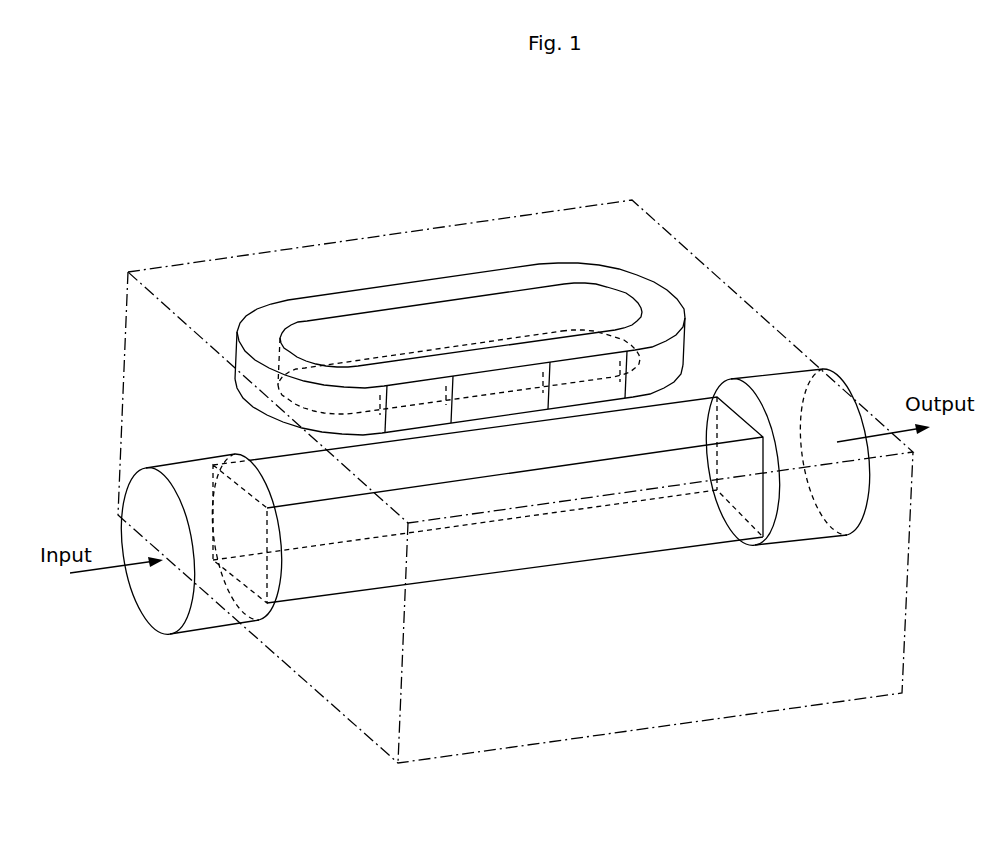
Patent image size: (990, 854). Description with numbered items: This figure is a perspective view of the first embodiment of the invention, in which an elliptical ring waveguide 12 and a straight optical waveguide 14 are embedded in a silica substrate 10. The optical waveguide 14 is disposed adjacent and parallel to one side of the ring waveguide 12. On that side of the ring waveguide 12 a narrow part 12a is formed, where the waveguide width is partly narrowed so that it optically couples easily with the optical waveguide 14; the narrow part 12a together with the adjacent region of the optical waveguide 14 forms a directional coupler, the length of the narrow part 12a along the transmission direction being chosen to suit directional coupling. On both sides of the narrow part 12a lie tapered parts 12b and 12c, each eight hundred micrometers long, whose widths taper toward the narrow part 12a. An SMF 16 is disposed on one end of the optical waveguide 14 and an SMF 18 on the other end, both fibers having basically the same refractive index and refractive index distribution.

The silica substrate 10 is at (704, 693).
The elliptical ring waveguide 12 is at (420, 290).
The narrow part 12a is at (500, 357).
The tapered part 12b is at (410, 373).
The tapered part 12c is at (593, 343).
The optical waveguide 14 is at (518, 555).
The SMF 16 is at (205, 617).
The SMF 18 is at (783, 390).